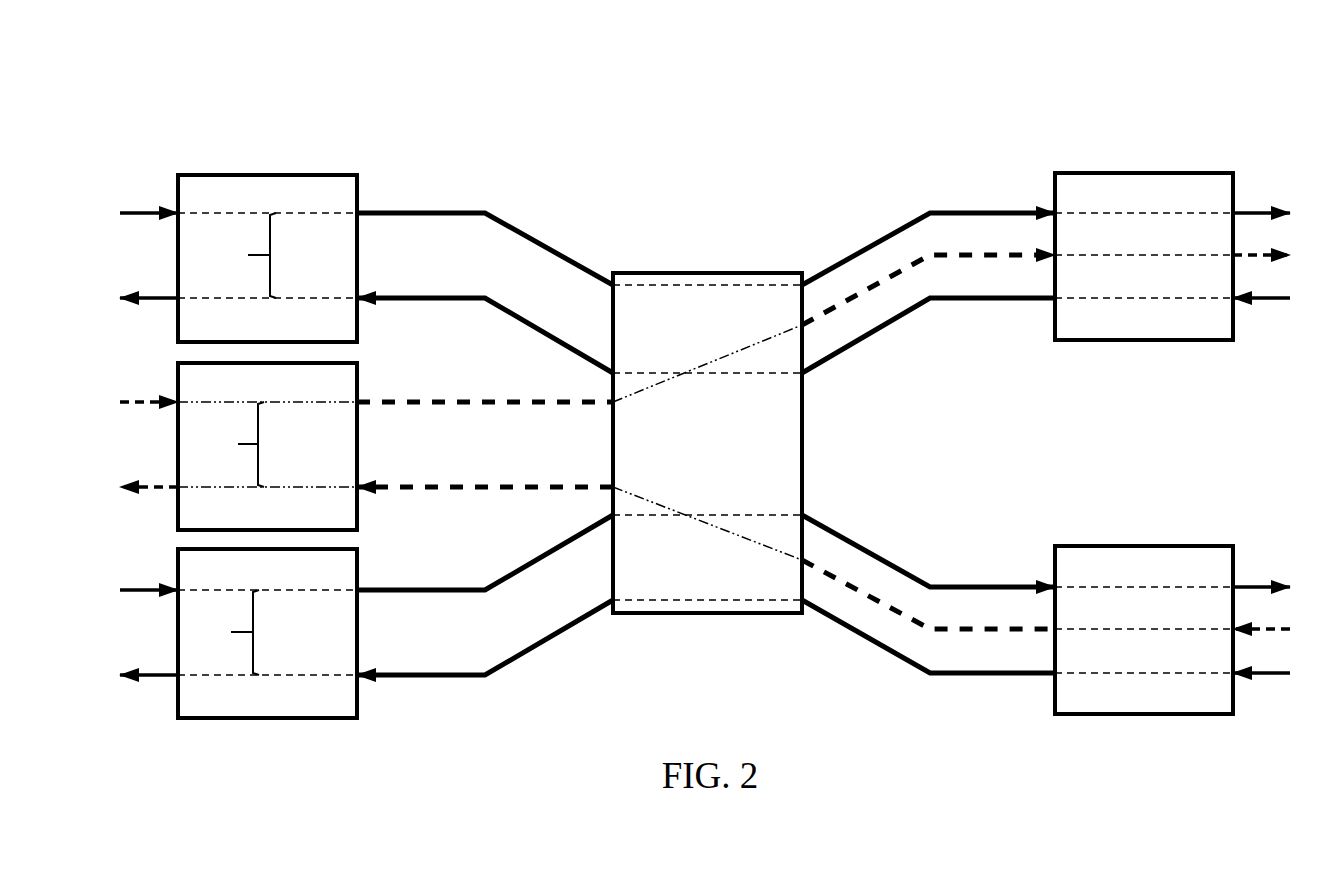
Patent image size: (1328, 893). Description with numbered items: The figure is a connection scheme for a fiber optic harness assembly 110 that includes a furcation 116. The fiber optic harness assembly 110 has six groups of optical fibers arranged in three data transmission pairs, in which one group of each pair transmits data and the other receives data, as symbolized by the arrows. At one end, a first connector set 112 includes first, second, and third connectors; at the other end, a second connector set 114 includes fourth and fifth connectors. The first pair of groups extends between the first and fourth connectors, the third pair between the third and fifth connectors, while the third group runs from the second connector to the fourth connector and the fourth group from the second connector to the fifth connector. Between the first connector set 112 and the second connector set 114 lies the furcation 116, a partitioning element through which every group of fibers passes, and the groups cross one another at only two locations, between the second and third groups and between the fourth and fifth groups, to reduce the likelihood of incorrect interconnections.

The fiber optic harness assembly 110 is at (927, 82).
The first connector set 112 is at (253, 137).
The second connector set 114 is at (1148, 138).
The furcation 116 is at (707, 443).